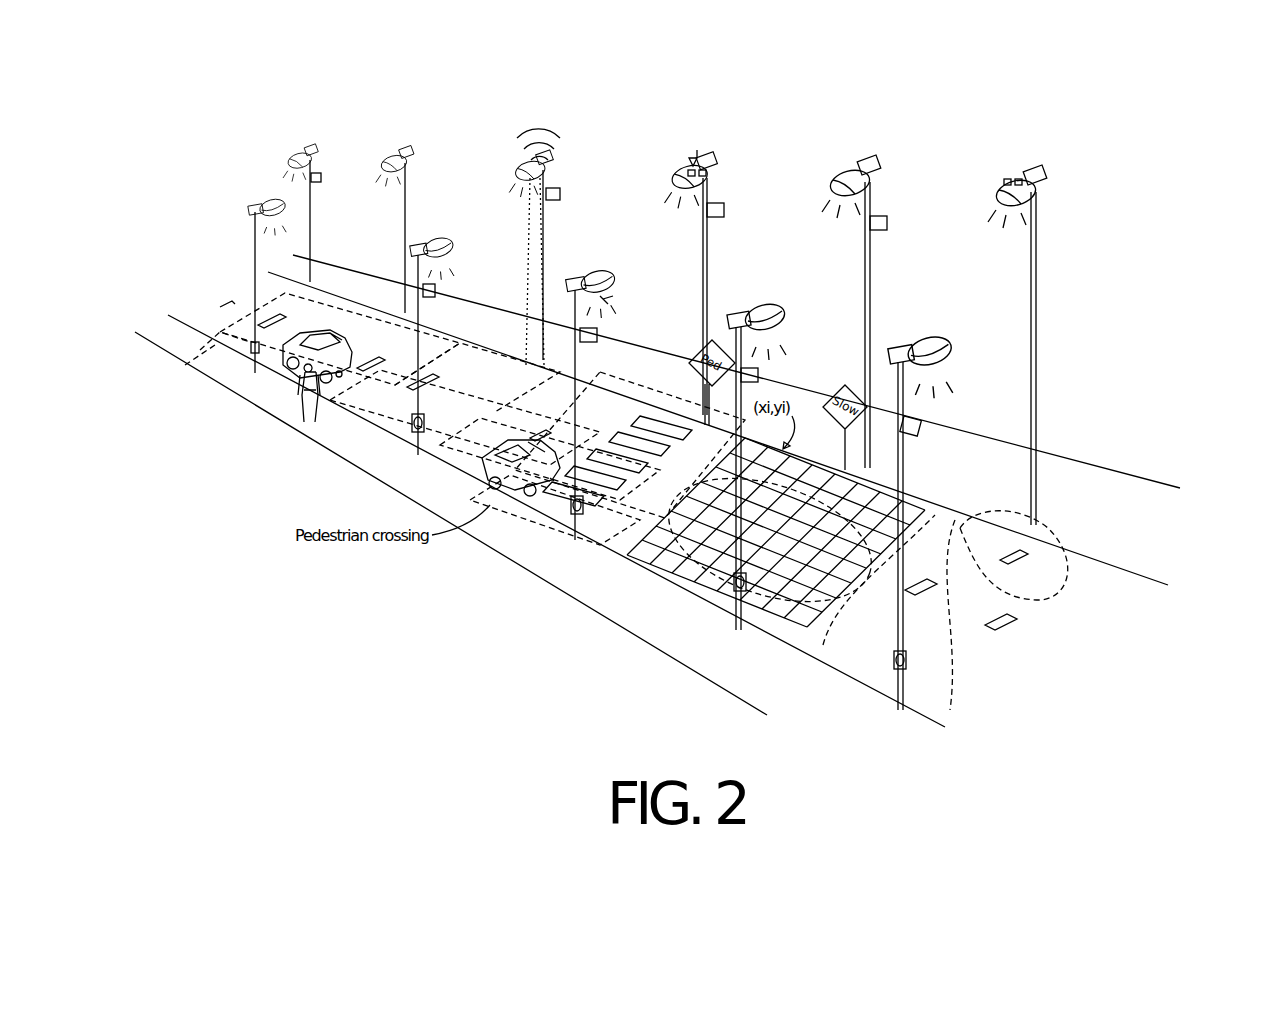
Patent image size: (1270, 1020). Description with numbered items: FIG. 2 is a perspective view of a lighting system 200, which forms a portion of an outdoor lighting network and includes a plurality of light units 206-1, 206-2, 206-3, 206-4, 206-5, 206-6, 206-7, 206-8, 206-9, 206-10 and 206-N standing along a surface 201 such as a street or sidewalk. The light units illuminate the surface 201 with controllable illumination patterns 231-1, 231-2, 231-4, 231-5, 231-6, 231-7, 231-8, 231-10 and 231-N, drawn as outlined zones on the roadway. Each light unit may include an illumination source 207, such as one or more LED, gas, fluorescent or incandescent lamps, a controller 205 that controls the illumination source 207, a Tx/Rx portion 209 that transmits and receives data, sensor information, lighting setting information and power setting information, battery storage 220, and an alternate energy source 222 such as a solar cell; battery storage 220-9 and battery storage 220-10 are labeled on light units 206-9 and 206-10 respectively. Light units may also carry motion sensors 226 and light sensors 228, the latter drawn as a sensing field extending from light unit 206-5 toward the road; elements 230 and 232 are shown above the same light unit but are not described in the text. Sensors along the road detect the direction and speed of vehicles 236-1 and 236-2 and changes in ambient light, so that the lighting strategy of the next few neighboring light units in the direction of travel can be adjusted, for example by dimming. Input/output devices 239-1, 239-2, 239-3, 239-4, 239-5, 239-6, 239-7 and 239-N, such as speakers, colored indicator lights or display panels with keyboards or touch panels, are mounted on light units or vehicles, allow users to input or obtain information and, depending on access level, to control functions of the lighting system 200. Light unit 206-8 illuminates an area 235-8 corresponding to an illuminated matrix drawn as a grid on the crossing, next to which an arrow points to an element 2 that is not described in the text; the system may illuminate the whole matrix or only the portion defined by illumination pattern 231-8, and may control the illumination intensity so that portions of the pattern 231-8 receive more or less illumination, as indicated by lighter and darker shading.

The lighting system 200 is at (1176, 122).
The surface 201 is at (782, 477).
The crosswalk 2 is at (688, 594).
The controller 205 is at (689, 168).
The light unit 206-1 is at (296, 152).
The light unit 206-2 is at (258, 208).
The light unit 206-3 is at (395, 158).
The light unit 206-4 is at (443, 240).
The light unit 206-5 is at (522, 168).
The light unit 206-6 is at (605, 278).
The light unit 206-7 is at (682, 172).
The light unit 206-8 is at (782, 310).
The light unit 206-9 is at (838, 177).
The light unit 206-10 is at (948, 343).
The light unit 206-N is at (992, 180).
The illumination source 207 is at (396, 184).
The Tx/Rx portion 209 is at (704, 165).
The battery storage 220 is at (322, 181).
The battery storage 220-9 is at (884, 232).
The battery storage 220-10 is at (920, 434).
The alternate energy source 222 is at (318, 150).
The motion sensor 226 is at (560, 192).
The light sensor 228 is at (526, 190).
The wireless signal 230 is at (552, 150).
The antenna 232 is at (530, 168).
The illumination pattern 231-1 is at (285, 302).
The illumination pattern 231-2 is at (232, 352).
The illumination pattern 231-4 is at (355, 444).
The illumination pattern 231-5 is at (485, 330).
The illumination pattern 231-6 is at (530, 527).
The illumination pattern 231-7 is at (612, 405).
The illumination pattern 231-8 is at (640, 545).
The illumination pattern 231-10 is at (940, 650).
The illumination pattern 231-N is at (1045, 586).
The illuminated area 235-8 is at (815, 638).
The vehicle 236-1 is at (325, 338).
The vehicle 236-2 is at (517, 440).
The input/output device 239-1 is at (232, 383).
The input/output device 239-2 is at (412, 433).
The input/output device 239-3 is at (572, 520).
The input/output device 239-4 is at (735, 592).
The input/output device 239-5 is at (300, 396).
The input/output device 239-6 is at (320, 433).
The input/output device 239-7 is at (505, 481).
The input/output device 239-N is at (906, 686).